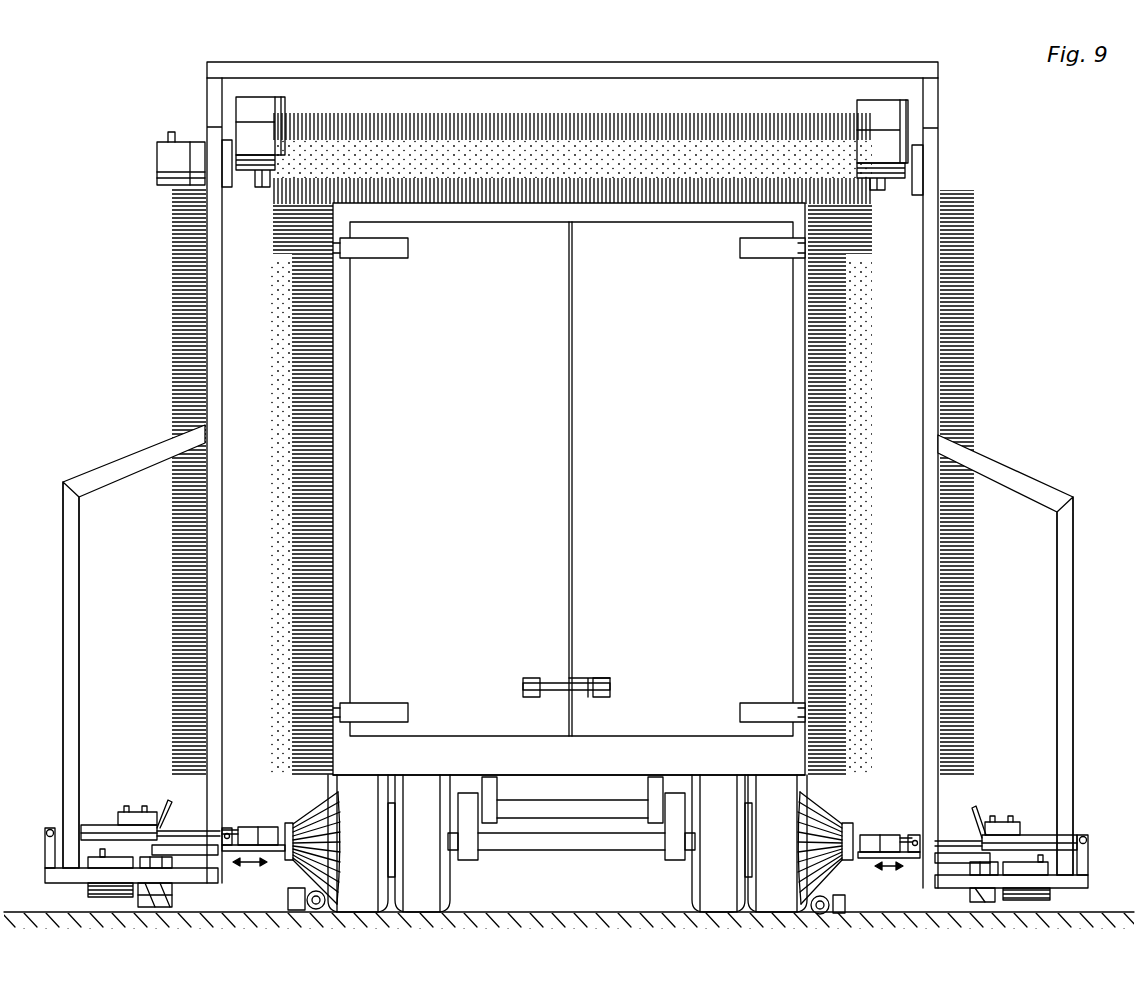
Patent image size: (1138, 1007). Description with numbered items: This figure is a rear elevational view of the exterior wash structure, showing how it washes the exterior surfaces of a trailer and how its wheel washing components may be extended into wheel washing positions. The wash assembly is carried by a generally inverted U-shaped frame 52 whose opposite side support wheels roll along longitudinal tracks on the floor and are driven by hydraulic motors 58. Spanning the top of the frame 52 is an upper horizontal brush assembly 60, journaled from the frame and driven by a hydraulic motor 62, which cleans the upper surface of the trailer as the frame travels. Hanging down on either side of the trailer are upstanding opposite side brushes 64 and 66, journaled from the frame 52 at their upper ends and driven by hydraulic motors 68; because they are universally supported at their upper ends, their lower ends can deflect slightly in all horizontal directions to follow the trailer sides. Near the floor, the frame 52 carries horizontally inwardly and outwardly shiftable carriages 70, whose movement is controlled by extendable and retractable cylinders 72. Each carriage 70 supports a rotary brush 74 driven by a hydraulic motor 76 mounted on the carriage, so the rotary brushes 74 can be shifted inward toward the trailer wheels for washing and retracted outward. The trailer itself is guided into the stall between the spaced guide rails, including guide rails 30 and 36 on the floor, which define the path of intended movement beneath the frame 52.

The guide rail 30 is at (310, 893).
The guide rail 36 is at (826, 897).
The inverted U-shaped frame 52 is at (940, 343).
The hydraulic motor 58 is at (88, 890).
The upper horizontal brush assembly 60 is at (383, 118).
The hydraulic motor 62 is at (175, 165).
The side brush 64 is at (287, 364).
The side brush 66 is at (852, 352).
The hydraulic motor 68 is at (257, 105).
The carriage 70 is at (190, 848).
The cylinder 72 is at (105, 828).
The rotary brush 74 is at (293, 825).
The hydraulic motor 76 is at (250, 833).